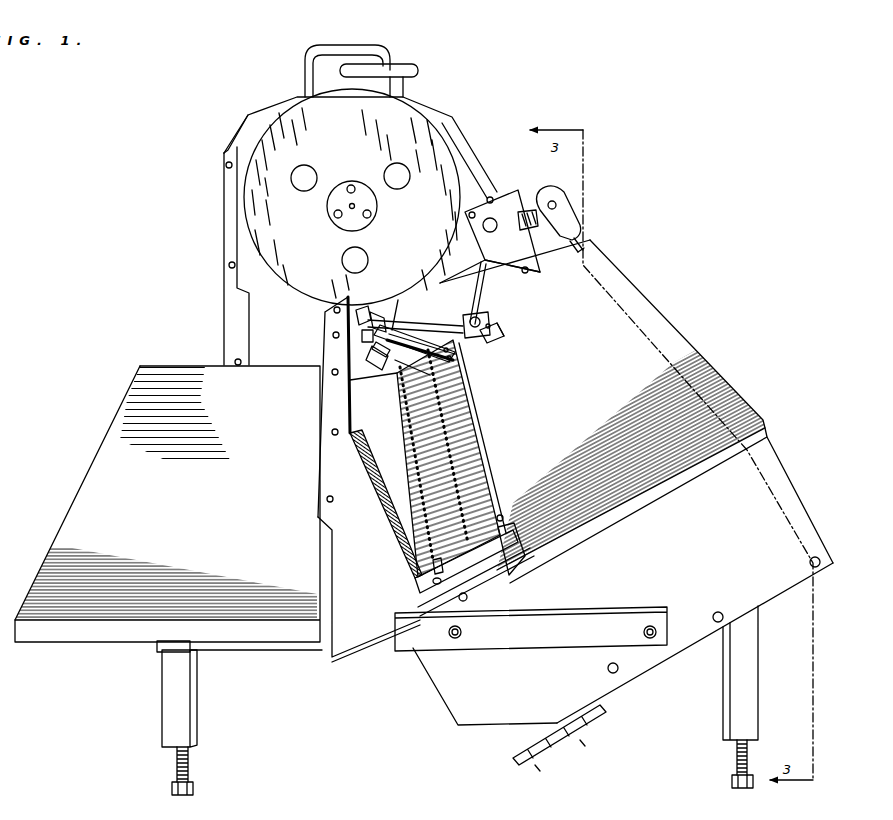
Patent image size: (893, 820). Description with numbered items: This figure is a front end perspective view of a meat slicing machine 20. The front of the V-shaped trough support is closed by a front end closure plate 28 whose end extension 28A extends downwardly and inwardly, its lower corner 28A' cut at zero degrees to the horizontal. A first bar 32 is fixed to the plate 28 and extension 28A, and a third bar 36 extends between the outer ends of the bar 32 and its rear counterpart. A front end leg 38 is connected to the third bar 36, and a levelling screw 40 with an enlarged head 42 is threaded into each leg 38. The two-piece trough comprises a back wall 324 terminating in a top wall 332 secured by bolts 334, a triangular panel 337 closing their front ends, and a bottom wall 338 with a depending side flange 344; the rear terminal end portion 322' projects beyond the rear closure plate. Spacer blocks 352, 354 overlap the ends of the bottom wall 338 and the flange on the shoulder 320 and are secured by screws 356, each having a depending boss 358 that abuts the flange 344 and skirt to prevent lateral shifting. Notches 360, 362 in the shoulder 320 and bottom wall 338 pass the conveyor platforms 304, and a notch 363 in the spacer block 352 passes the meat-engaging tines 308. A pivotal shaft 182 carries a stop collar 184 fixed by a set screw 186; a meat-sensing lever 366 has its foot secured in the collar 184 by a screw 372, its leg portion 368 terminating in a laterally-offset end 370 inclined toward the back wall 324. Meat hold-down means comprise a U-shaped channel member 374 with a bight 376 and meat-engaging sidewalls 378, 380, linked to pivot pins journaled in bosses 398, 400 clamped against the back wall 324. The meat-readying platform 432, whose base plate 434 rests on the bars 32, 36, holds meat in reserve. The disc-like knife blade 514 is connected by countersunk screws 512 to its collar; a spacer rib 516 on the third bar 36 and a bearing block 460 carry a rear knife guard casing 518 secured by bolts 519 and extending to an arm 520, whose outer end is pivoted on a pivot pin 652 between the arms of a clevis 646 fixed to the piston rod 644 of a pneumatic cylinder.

The meat slicing machine 20 is at (625, 246).
The front end closure plate 28 is at (782, 588).
The end extension 28A is at (474, 688).
The lower corner 28A' is at (529, 738).
The first bar 32 is at (272, 646).
The third bar 36 is at (157, 651).
The front end leg 38 is at (167, 703).
The adjustable levelling screw 40 is at (177, 768).
The enlarged head 42 is at (173, 791).
The shaft 182 is at (500, 313).
The stop collar 184 is at (492, 336).
The set screw 186 is at (509, 340).
The conveyor platform 304 is at (462, 440).
The tines 308 is at (435, 472).
The shoulder 320 is at (476, 385).
The rear terminal end portion 322' is at (410, 290).
The back wall 324 is at (402, 472).
The top wall 332 is at (323, 485).
The bolts 334 is at (326, 505).
The triangular panel 337 is at (370, 623).
The bottom wall 338 is at (622, 357).
The side flange 344 is at (658, 490).
The spacer block 352 is at (505, 525).
The spacer block 354 is at (457, 345).
The screws 356 is at (442, 581).
The boss 358 is at (490, 580).
The notches 360 is at (416, 574).
The notches 362 is at (500, 514).
The notch 363 is at (442, 570).
The meat-sensing lever 366 is at (446, 322).
The leg portion 368 is at (428, 332).
The laterally-offset end 370 is at (412, 342).
The screw 372 is at (493, 324).
The channel member 374 is at (400, 352).
The bight 376 is at (358, 360).
The meat-engaging sidewall 378 is at (413, 363).
The meat-engaging sidewall 380 is at (432, 373).
The boss 398 is at (380, 310).
The boss 400 is at (363, 310).
The meat-readying platform 432 is at (114, 424).
The base plate 434 is at (105, 469).
The bearing block 460 is at (527, 238).
The countersunk screws 512 is at (352, 197).
The knife blade 514 is at (418, 130).
The spacer rib 516 is at (222, 218).
The rear knife guard casing 518 is at (462, 129).
The bolts 519 is at (225, 150).
The arm 520 is at (516, 196).
The piston rod 644 is at (580, 240).
The clevis 646 is at (567, 209).
The pivot pin 652 is at (560, 191).